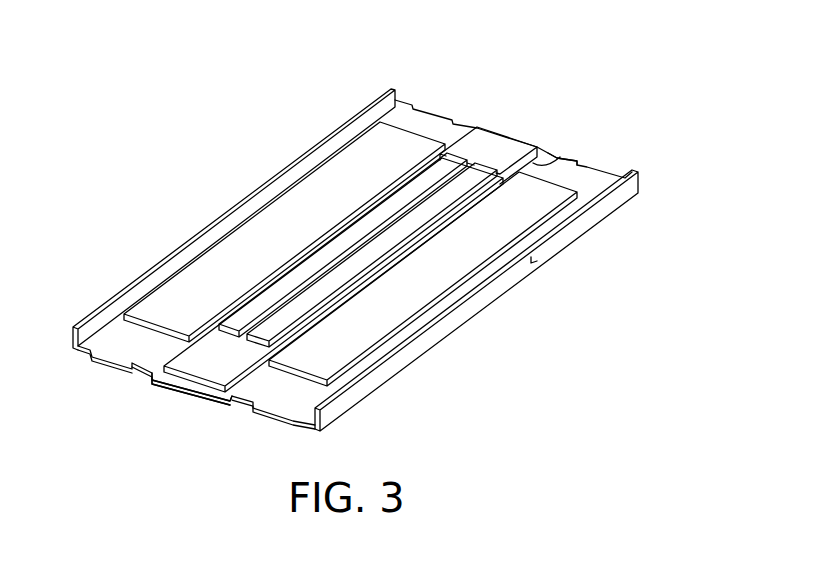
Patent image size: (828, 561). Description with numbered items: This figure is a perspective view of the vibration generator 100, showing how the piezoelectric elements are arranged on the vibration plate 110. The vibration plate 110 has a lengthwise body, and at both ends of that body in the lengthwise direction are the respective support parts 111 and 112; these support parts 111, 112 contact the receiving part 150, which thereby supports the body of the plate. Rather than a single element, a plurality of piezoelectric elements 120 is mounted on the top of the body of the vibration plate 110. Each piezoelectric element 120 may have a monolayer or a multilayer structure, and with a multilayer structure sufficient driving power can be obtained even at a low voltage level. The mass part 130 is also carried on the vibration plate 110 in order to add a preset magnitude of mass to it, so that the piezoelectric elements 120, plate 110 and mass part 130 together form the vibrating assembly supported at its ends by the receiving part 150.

The vibration generator 100 is at (110, 31).
The vibration plate 110 is at (495, 142).
The support part 111 is at (190, 389).
The support part 112 is at (557, 160).
The piezoelectric element 120 is at (383, 237).
The mass part 130 is at (337, 283).
The receiving part 150 is at (568, 242).